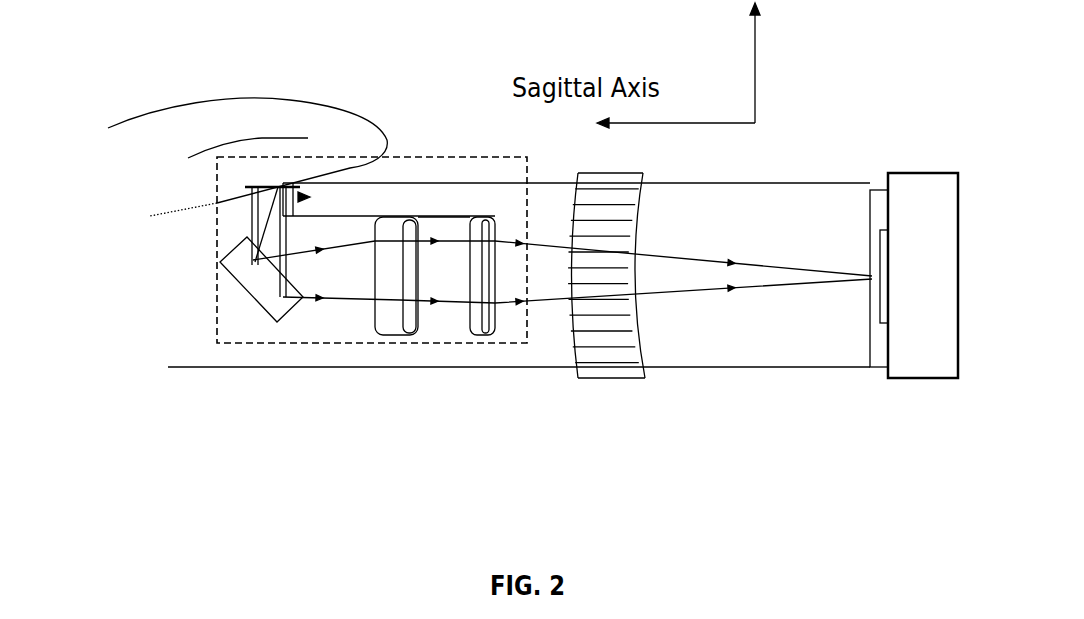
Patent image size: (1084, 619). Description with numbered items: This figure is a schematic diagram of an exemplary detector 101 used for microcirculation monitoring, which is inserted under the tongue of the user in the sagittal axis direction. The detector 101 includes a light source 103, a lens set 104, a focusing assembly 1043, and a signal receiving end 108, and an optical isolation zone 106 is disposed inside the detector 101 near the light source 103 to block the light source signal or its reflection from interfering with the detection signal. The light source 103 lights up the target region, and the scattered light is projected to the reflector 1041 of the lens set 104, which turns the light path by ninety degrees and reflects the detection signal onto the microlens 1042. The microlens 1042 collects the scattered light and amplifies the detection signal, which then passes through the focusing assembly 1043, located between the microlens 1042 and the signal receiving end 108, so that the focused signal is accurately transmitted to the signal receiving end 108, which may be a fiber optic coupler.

The detector 101 is at (305, 43).
The light source 103 is at (243, 197).
The lens set 104 is at (240, 350).
The reflector 1041 is at (240, 286).
The microlens 1042 is at (388, 333).
The focusing assembly 1043 is at (594, 379).
The optical isolation zone 106 is at (387, 200).
The signal receiving end 108 is at (937, 378).